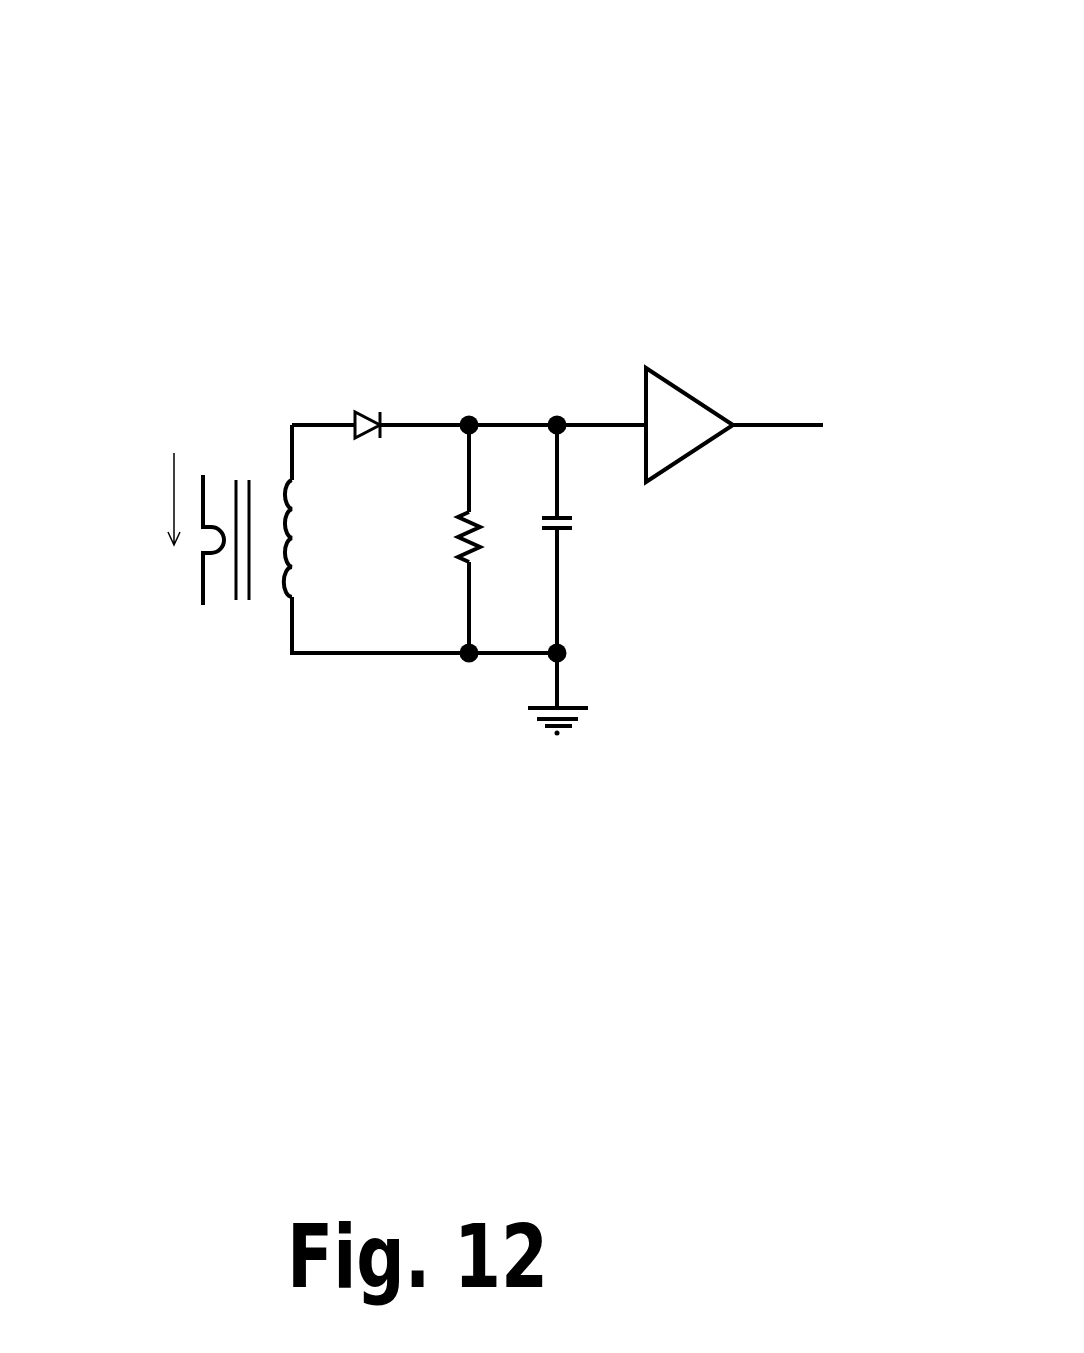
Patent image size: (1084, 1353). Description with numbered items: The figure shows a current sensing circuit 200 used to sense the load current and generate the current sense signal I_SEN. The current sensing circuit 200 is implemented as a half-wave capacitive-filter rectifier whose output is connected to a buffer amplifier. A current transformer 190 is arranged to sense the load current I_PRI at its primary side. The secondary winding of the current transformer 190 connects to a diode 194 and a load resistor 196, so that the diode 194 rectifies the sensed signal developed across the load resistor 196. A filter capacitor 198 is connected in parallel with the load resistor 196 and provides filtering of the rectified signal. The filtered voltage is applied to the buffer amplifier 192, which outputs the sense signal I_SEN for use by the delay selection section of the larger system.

The current sensing circuit 200 is at (413, 78).
The current transformer 190 is at (256, 382).
The buffer amplifier 192 is at (683, 387).
The diode 194 is at (380, 418).
The load resistor 196 is at (470, 557).
The filter capacitor 198 is at (572, 528).